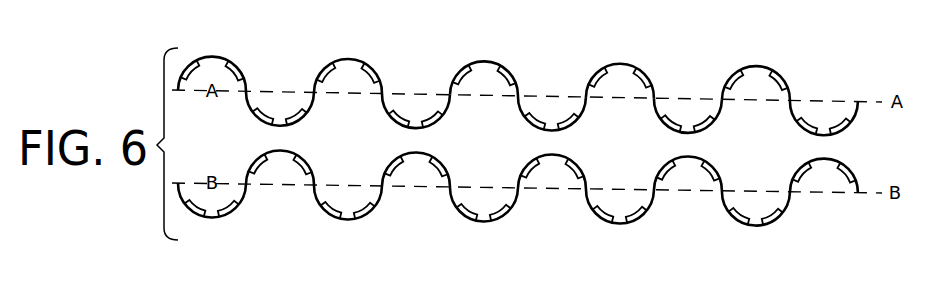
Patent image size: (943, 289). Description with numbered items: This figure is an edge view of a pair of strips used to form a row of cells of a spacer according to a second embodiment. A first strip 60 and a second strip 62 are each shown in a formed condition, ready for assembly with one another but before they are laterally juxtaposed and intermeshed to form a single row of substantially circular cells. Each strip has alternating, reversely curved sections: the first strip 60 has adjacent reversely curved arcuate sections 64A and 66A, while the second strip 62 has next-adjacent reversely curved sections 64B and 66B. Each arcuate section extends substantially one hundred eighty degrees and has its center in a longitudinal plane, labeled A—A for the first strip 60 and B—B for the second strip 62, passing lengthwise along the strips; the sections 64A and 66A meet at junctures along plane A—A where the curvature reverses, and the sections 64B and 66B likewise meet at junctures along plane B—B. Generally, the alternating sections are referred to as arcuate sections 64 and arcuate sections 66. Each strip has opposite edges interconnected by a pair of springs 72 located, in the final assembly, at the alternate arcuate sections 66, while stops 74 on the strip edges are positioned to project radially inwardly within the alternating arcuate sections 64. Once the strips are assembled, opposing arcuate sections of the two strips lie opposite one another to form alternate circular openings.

The first strip 60 is at (750, 63).
The second strip 62 is at (754, 227).
The arcuate sections 64 is at (348, 220).
The reversely curved arcuate section 64A is at (412, 128).
The reversely curved section 64B is at (483, 223).
The arcuate sections 66 is at (340, 60).
The reversely curved arcuate section 66A is at (483, 61).
The reversely curved section 66B is at (413, 154).
The springs 72 is at (465, 77).
The stops 74 is at (477, 212).